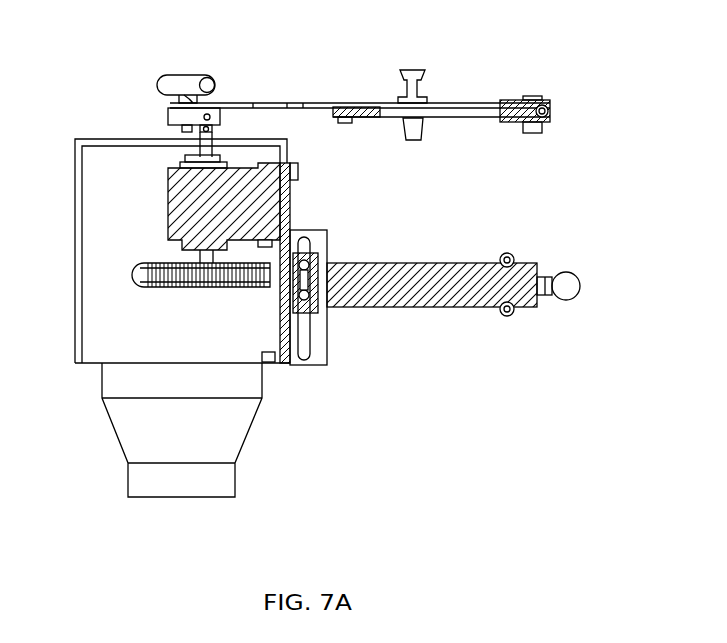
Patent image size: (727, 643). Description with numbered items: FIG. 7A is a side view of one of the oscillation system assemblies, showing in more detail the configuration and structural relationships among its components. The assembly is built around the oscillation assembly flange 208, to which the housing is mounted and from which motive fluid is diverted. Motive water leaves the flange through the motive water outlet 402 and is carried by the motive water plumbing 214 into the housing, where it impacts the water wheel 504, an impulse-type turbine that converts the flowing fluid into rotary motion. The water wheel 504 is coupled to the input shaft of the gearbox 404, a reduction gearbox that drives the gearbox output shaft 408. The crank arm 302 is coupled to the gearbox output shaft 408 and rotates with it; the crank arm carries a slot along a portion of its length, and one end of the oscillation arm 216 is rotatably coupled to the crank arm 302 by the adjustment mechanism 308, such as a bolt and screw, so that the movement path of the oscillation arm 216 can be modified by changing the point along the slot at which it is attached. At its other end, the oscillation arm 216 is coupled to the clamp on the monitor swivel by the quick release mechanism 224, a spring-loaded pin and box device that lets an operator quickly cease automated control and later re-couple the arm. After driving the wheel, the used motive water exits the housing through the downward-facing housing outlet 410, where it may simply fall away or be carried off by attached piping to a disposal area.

The adjustment mechanism 308 is at (185, 80).
The oscillation arm 216 is at (303, 102).
The quick release mechanism 224 is at (425, 82).
The crank arm 302 is at (192, 120).
The gearbox output shaft 408 is at (202, 152).
The gearbox 404 is at (178, 197).
The water wheel 504 is at (170, 278).
The oscillation assembly flange 208 is at (443, 302).
The motive water outlet 402 is at (535, 273).
The motive water plumbing 214 is at (570, 288).
The housing outlet 410 is at (140, 477).